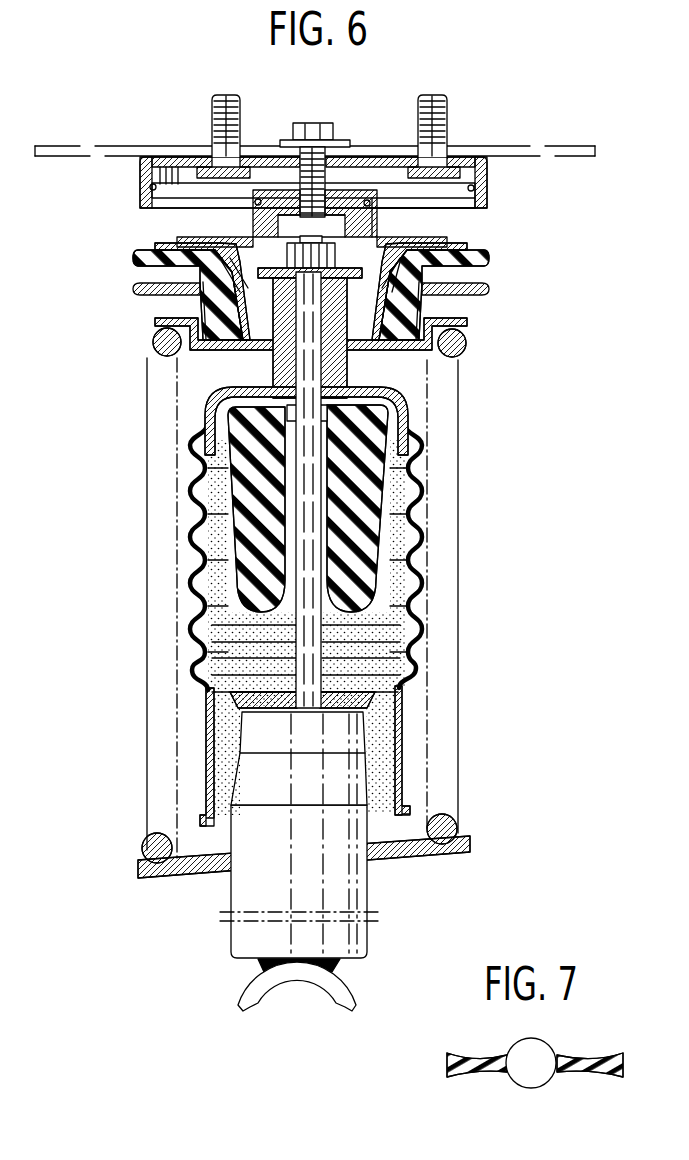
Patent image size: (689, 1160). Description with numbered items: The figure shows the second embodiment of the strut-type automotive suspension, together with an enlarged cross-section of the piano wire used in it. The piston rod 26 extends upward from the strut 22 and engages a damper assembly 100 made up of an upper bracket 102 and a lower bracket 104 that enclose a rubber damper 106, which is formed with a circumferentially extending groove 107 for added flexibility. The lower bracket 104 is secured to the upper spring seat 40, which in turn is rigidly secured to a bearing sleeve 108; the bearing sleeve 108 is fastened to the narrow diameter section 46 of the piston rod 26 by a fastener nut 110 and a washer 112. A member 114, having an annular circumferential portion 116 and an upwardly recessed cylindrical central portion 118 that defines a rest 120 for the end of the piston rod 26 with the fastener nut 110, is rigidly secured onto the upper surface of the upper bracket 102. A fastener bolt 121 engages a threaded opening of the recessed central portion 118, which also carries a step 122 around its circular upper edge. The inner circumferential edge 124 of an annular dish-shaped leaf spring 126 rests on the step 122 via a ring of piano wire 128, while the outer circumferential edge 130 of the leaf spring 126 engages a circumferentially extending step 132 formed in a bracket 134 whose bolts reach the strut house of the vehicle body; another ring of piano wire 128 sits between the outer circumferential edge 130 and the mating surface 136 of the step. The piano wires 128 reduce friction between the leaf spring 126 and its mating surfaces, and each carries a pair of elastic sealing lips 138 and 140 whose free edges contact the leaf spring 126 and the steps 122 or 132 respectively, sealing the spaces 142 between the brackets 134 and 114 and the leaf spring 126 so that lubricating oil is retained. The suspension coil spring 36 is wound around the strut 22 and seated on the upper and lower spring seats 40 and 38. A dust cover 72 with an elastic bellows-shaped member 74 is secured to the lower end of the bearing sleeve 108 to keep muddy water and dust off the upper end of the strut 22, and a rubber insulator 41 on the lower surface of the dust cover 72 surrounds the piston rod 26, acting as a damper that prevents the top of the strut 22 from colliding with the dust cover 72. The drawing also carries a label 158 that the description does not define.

In FIG. 6, the strut 22 is at (368, 898).
In FIG. 6, the piston rod 26 is at (292, 620).
In FIG. 6, the suspension coil spring 36 is at (450, 572).
In FIG. 6, the lower spring seat 38 is at (466, 852).
In FIG. 6, the upper spring seat 40 is at (467, 320).
In FIG. 6, the rubber insulator 41 is at (373, 517).
In FIG. 6, the narrow diameter section 46 is at (309, 335).
In FIG. 6, the dust cover 72 is at (410, 410).
In FIG. 6, the elastic bellows-shaped member 74 is at (410, 618).
In FIG. 6, the damper assembly 100 is at (346, 283).
In FIG. 6, the upper bracket 102 is at (163, 242).
In FIG. 6, the lower bracket 104 is at (472, 292).
In FIG. 6, the rubber damper 106 is at (198, 305).
In FIG. 6, the circumferentially extending groove 107 is at (225, 271).
In FIG. 6, the bearing sleeve 108 is at (343, 370).
In FIG. 6, the fastener nut 110 is at (400, 283).
In FIG. 6, the washer 112 is at (200, 286).
In FIG. 6, the member 114 is at (383, 223).
In FIG. 6, the annular circumferential portion 116 is at (177, 235).
In FIG. 6, the recessed central portion 118 is at (340, 192).
In FIG. 6, the rest 120 is at (358, 225).
In FIG. 6, the fastener bolt 121 is at (315, 122).
In FIG. 6, the step 122 is at (368, 238).
In FIG. 6, the inner circumferential edge 124 is at (268, 192).
In FIG. 6, the leaf spring 126 is at (447, 197).
In FIG. 6, the piano wire 128 is at (150, 157).
In FIG. 7, the piano wire 128 is at (529, 1089).
In FIG. 6, the outer circumferential edge 130 is at (473, 203).
In FIG. 6, the circumferentially extending step 132 is at (480, 183).
In FIG. 6, the bracket 134 is at (470, 157).
In FIG. 6, the mating surface 136 is at (335, 243).
In FIG. 7, the sealing lip 138 is at (471, 1078).
In FIG. 7, the sealing lip 140 is at (587, 1078).
In FIG. 6, the spaces 142 is at (250, 197).
In FIG. 6, the mounting stud 158 is at (227, 97).